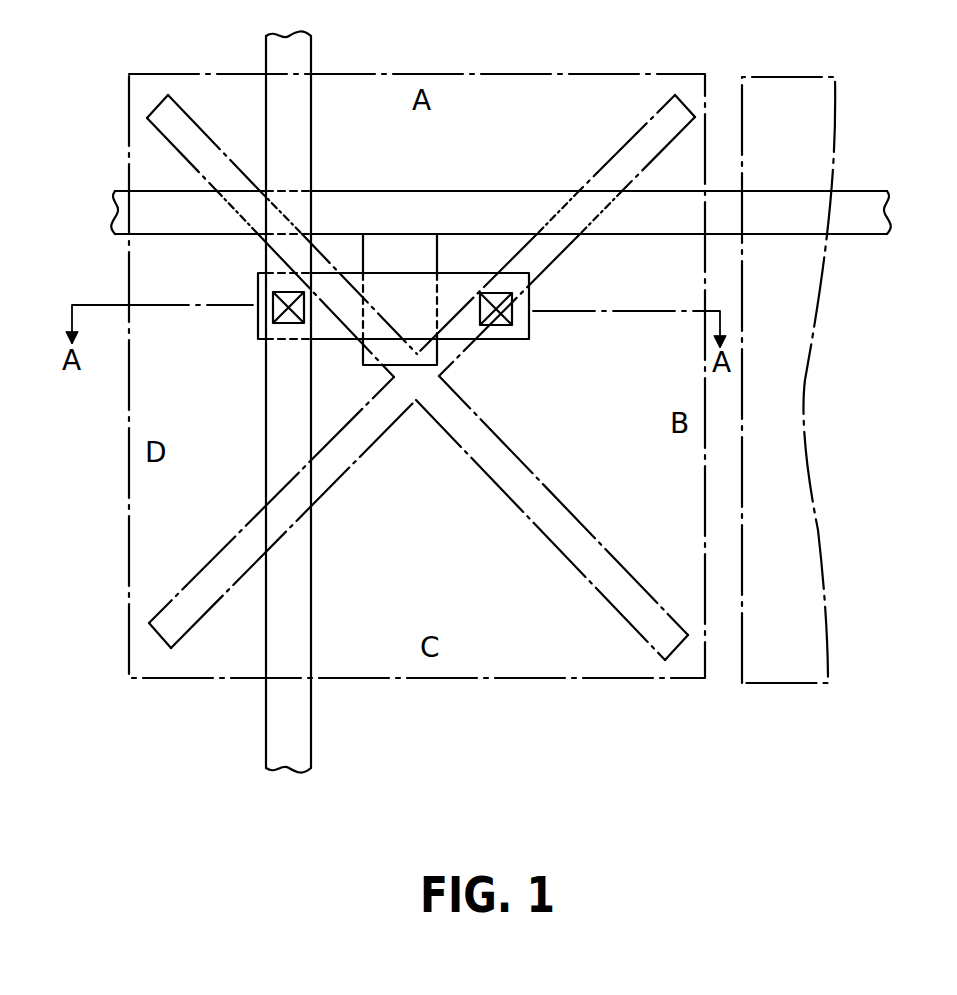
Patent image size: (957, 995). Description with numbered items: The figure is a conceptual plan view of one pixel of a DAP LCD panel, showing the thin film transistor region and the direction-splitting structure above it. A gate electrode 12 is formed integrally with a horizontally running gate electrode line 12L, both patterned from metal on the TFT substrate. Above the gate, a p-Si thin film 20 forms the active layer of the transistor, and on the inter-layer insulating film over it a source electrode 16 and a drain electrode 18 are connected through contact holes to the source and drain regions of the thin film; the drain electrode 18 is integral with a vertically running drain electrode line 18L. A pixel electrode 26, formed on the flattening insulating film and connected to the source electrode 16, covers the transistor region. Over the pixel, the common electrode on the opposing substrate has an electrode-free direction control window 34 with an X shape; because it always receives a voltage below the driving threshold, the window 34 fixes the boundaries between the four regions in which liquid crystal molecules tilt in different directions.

The gate electrode line 12L is at (853, 192).
The drain electrode line 18L is at (263, 738).
The gate electrode 12 is at (362, 360).
The source electrode 16 is at (513, 318).
The drain electrode 18 is at (293, 326).
The p-Si thin film 20 is at (242, 329).
The pixel electrode 26 is at (705, 430).
The direction control window 34 is at (453, 440).